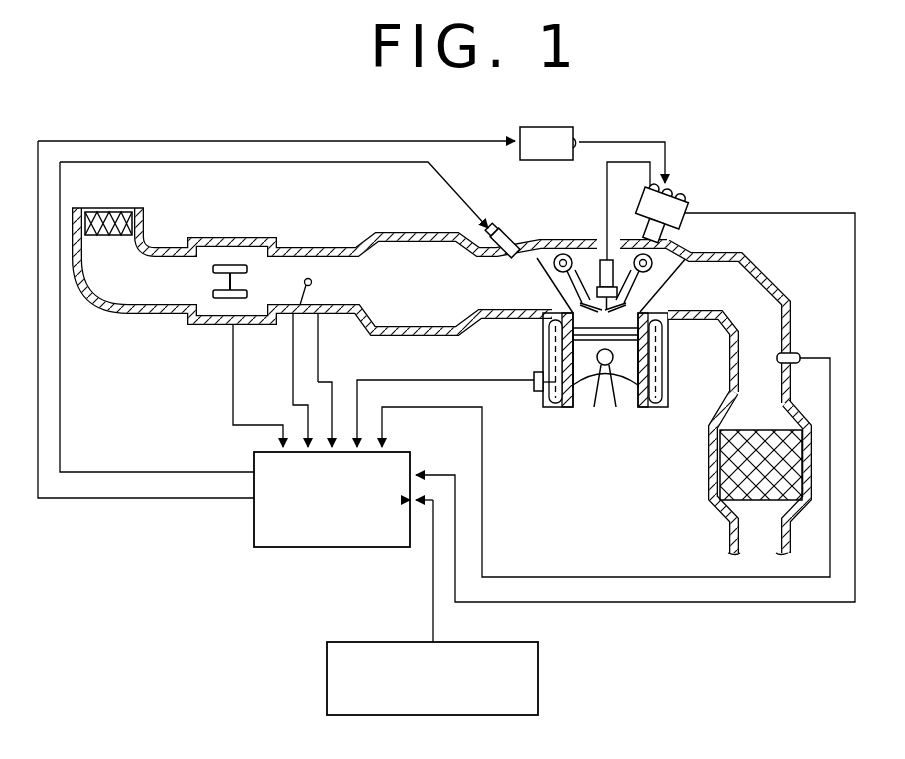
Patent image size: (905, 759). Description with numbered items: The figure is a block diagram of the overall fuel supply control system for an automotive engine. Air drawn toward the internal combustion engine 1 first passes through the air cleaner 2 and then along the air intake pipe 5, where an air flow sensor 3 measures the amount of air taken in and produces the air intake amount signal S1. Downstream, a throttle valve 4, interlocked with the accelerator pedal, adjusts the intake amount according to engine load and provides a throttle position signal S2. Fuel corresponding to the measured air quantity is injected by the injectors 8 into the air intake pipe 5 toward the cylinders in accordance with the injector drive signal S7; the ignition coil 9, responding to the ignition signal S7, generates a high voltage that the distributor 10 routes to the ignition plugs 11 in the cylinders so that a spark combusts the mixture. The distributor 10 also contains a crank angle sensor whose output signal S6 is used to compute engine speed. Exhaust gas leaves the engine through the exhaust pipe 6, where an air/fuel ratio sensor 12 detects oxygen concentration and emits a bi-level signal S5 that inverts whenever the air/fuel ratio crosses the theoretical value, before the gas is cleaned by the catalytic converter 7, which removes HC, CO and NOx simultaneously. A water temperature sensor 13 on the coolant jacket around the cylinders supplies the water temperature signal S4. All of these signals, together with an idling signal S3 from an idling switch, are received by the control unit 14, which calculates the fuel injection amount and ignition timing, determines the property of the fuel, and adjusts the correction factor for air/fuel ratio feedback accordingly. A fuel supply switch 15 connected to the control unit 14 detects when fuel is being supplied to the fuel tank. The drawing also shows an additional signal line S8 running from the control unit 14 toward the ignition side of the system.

The internal combustion engine 1 is at (668, 356).
The air cleaner 2 is at (121, 208).
The air flow sensor 3 is at (237, 237).
The throttle valve 4 is at (310, 279).
The air intake pipe 5 is at (516, 320).
The exhaust pipe 6 is at (738, 255).
The catalytic converter Rhodium (CCRO) 7 is at (710, 470).
The injector 8 is at (506, 232).
The ignition coil 9 is at (575, 127).
The distributor 10 is at (690, 205).
The ignition plug 11 is at (600, 258).
The air/fuel ratio sensor 12 is at (794, 352).
The water temperature sensor 13 is at (538, 392).
The control unit 14 is at (329, 548).
The fuel supply switch 15 is at (538, 680).
The air intake amount signal S1 is at (233, 367).
The throttle position signal S2 is at (293, 370).
The idling signal S3 is at (320, 372).
The water temperature signal S4 is at (383, 380).
The bi-level output signal of air/fuel ratio sensor S5 is at (482, 485).
The crank angle sensor output signal S6 is at (640, 602).
The injector drive signal / ignition signal S7 is at (133, 472).
The signal S8 is at (132, 498).